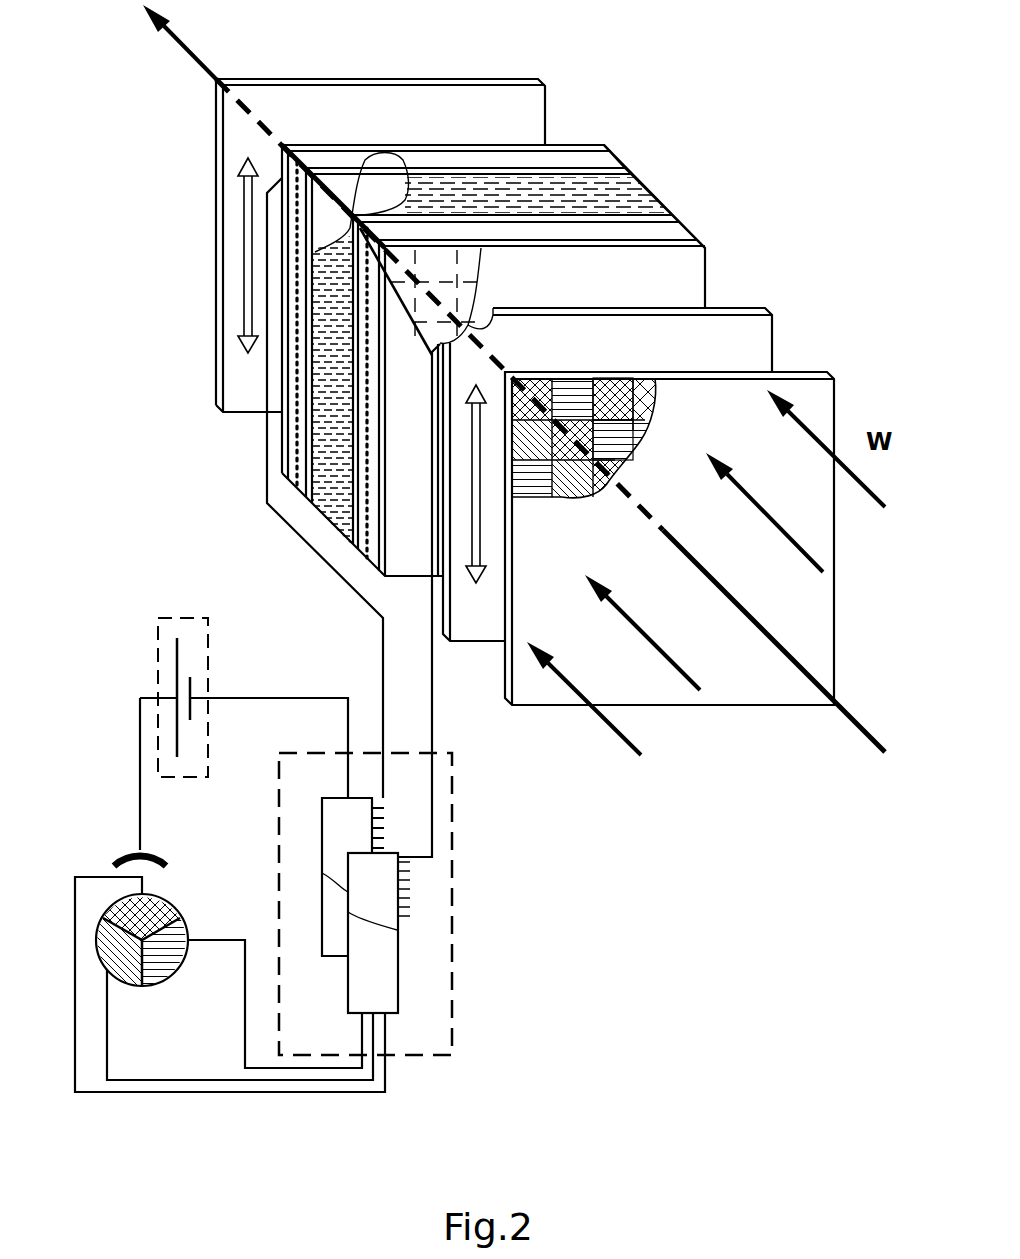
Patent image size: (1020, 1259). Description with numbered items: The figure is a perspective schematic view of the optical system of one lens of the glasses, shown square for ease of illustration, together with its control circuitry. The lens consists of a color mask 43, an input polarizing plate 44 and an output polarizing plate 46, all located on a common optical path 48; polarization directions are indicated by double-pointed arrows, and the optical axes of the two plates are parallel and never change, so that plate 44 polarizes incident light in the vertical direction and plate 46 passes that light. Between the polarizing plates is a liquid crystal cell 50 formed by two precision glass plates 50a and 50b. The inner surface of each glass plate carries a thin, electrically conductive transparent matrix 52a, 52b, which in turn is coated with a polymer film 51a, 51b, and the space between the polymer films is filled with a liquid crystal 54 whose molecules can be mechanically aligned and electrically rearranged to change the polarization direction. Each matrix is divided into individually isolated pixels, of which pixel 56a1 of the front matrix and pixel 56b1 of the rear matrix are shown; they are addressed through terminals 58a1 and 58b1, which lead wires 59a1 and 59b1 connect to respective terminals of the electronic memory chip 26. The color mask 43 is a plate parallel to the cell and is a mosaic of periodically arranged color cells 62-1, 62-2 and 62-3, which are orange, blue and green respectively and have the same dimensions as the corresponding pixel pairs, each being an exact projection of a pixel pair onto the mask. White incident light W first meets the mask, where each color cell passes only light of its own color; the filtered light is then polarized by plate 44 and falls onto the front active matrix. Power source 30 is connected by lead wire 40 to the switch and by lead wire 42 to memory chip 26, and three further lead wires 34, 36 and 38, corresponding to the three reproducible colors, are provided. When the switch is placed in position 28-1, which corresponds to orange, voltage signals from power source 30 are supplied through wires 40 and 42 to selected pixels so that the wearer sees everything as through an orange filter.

The memory chip 26 is at (419, 1070).
The switch position 28-1 is at (130, 848).
The power source 30 is at (160, 617).
The lead wire 34 is at (300, 1093).
The lead wire 36 is at (238, 1082).
The lead wire 38 is at (243, 1025).
The lead wire 40 is at (268, 697).
The lead wire 42 is at (158, 697).
The color mask 43 is at (665, 690).
The input polarizing plate 44 is at (467, 625).
The output polarizing plate 46 is at (470, 120).
The common optical path 48 is at (201, 65).
The liquid crystal cell 50 is at (696, 203).
The glass plate 50a is at (699, 240).
The glass plate 50b is at (305, 165).
The polymer film 51a is at (385, 216).
The polymer film 51b is at (303, 200).
The transparent matrix 52a is at (677, 198).
The transparent matrix 52b is at (628, 158).
The liquid crystal 54 is at (552, 193).
The pixel 56a1 is at (438, 265).
The pixel 56b1 is at (361, 190).
The terminal 58a1 is at (367, 380).
The terminal 58b1 is at (300, 252).
The lead wire 59a1 is at (432, 675).
The lead wire 59b1 is at (269, 498).
The color cell 62-1 is at (622, 382).
The color cell 62-2 is at (613, 437).
The color cell 62-3 is at (625, 402).